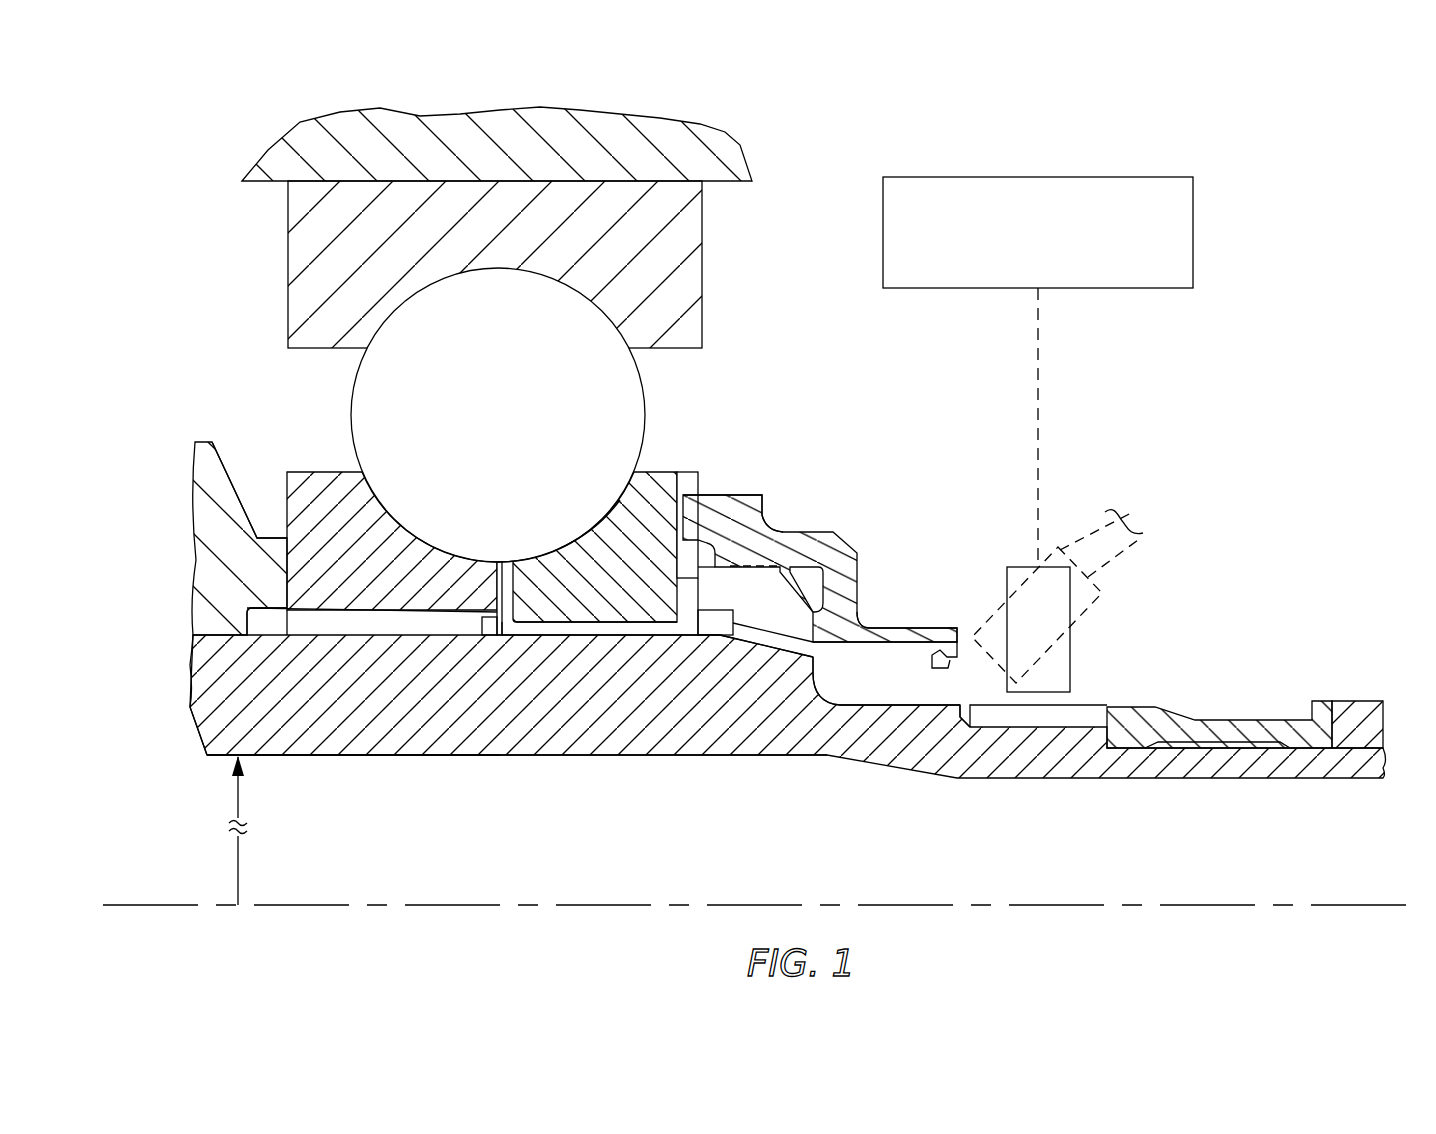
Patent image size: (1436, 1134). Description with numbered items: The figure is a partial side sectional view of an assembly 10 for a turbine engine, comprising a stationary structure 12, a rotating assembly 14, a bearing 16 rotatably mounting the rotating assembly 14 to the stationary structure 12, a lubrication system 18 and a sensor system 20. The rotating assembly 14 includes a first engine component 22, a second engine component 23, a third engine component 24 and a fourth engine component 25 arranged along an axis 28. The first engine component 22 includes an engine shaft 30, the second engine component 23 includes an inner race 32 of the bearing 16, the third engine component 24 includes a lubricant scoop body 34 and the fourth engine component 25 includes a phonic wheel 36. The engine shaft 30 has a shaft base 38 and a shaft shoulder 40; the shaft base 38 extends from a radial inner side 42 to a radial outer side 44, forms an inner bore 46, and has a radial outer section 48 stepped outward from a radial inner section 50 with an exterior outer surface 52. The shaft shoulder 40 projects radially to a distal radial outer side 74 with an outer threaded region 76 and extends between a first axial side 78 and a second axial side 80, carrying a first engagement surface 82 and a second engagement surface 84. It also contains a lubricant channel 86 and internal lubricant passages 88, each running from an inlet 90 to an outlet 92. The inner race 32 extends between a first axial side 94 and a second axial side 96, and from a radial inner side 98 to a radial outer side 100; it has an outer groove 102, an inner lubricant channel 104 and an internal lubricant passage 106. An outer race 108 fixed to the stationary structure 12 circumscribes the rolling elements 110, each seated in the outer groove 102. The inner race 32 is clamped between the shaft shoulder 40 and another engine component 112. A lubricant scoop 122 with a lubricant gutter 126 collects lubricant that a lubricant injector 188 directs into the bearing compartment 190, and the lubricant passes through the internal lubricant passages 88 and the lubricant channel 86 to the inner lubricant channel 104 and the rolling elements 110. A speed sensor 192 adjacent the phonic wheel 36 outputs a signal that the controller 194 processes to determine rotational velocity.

The assembly 10 is at (172, 137).
The stationary structure 12 is at (515, 128).
The rotating assembly 14 is at (122, 780).
The bearing 16 is at (258, 335).
The lubrication system 18 is at (1098, 573).
The sensor system 20 is at (1080, 323).
The first engine component 22 is at (188, 697).
The second engine component 23 is at (433, 500).
The third engine component 24 is at (831, 544).
The fourth engine component 25 is at (1255, 685).
The axis 28 is at (135, 908).
The engine shaft 30 is at (127, 695).
The inner race 32 is at (312, 460).
The lubricant scoop body 34 is at (831, 544).
The phonic wheel 36 is at (1308, 692).
The shaft base 38 is at (774, 738).
The shaft shoulder 40 is at (735, 591).
The radial inner side 42 is at (218, 757).
The radial outer side 44 is at (192, 607).
The inner bore 46 is at (286, 831).
The radial outer section 48 is at (452, 718).
The radial inner section 50 is at (774, 738).
The exterior outer surface 52 is at (893, 703).
The distal radial outer side 74 is at (764, 491).
The outer threaded region 76 is at (743, 563).
The first axial side 78 is at (587, 528).
The second axial side 80 is at (896, 608).
The first engagement surface 82 is at (540, 524).
The second engagement surface 84 is at (822, 622).
The lubricant channel 86 is at (705, 635).
The internal lubricant passages 88 is at (770, 650).
The inlet 90 is at (825, 643).
The outlet 92 is at (717, 627).
The first axial side of the inner race 94 is at (285, 490).
The second axial side of the inner race 96 is at (700, 490).
The radial inner side of the inner race 98 is at (327, 637).
The radial outer side of the inner race 100 is at (362, 473).
The outer groove 102 is at (423, 523).
The inner lubricant channel 104 is at (553, 625).
The internal lubricant passage 106 is at (497, 583).
The outer race 108 is at (495, 264).
The rolling element 110 is at (498, 415).
The engine component 112 is at (193, 517).
The lubricant scoop 122 is at (928, 677).
The lubricant gutter 126 is at (870, 769).
The lubricant injector 188 is at (1092, 605).
The bearing compartment 190 is at (835, 331).
The speed sensor 192 is at (1070, 657).
The controller 194 is at (1193, 232).